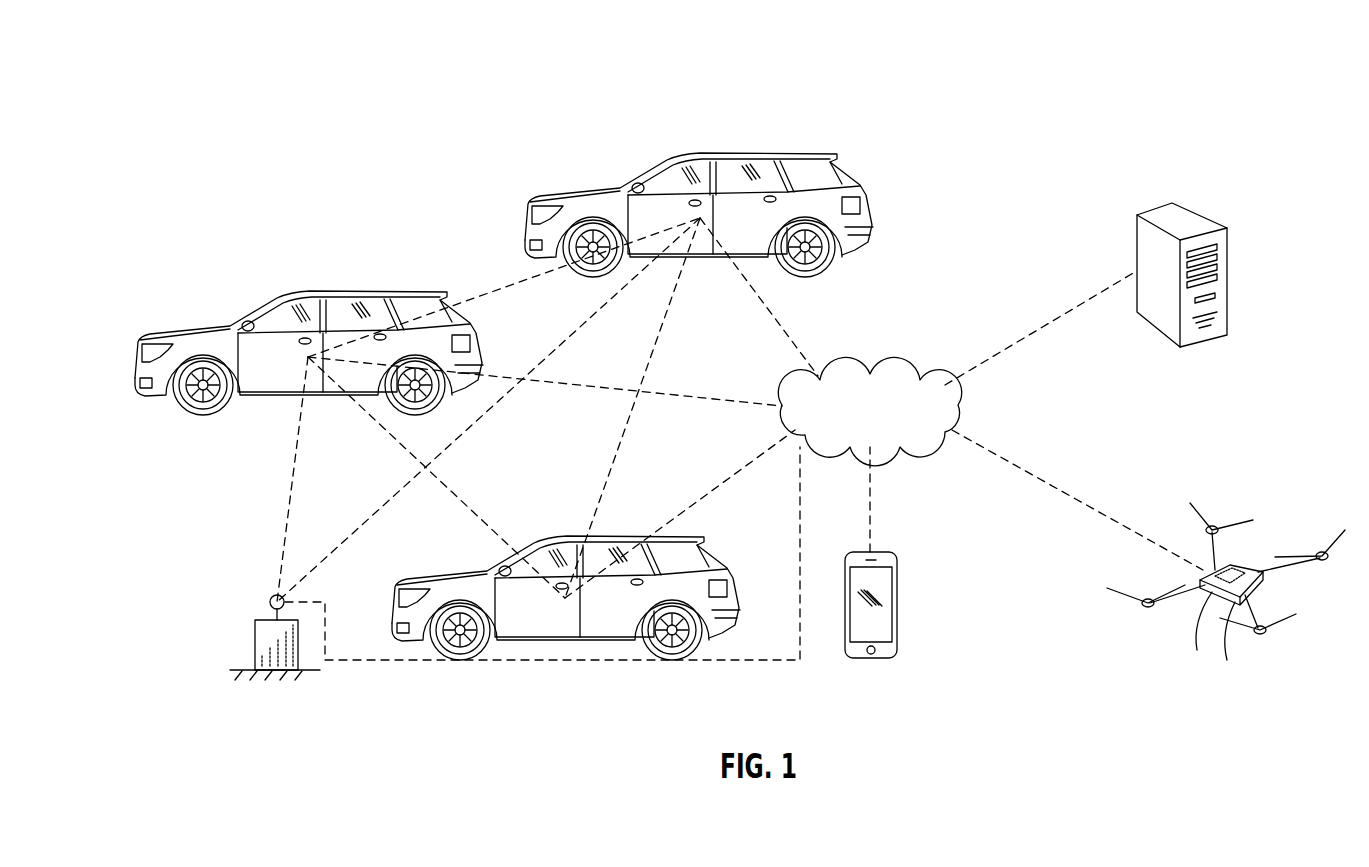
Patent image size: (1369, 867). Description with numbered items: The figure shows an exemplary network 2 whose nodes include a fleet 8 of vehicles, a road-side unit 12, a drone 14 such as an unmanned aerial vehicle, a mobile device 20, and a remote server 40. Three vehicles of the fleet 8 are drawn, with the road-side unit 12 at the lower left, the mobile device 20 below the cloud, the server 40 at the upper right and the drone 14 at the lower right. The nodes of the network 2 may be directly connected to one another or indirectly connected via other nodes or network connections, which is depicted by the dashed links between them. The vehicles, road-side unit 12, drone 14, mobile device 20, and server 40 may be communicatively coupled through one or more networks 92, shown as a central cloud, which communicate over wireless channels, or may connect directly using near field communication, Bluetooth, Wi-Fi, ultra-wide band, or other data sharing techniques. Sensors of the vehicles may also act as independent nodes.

The network 2 is at (1230, 188).
The fleet 8 is at (172, 235).
The road-side unit 12 is at (255, 633).
The drone 14 is at (1225, 522).
The mobile device 20 is at (898, 603).
The remote server 40 is at (1228, 293).
The network 92 is at (885, 422).